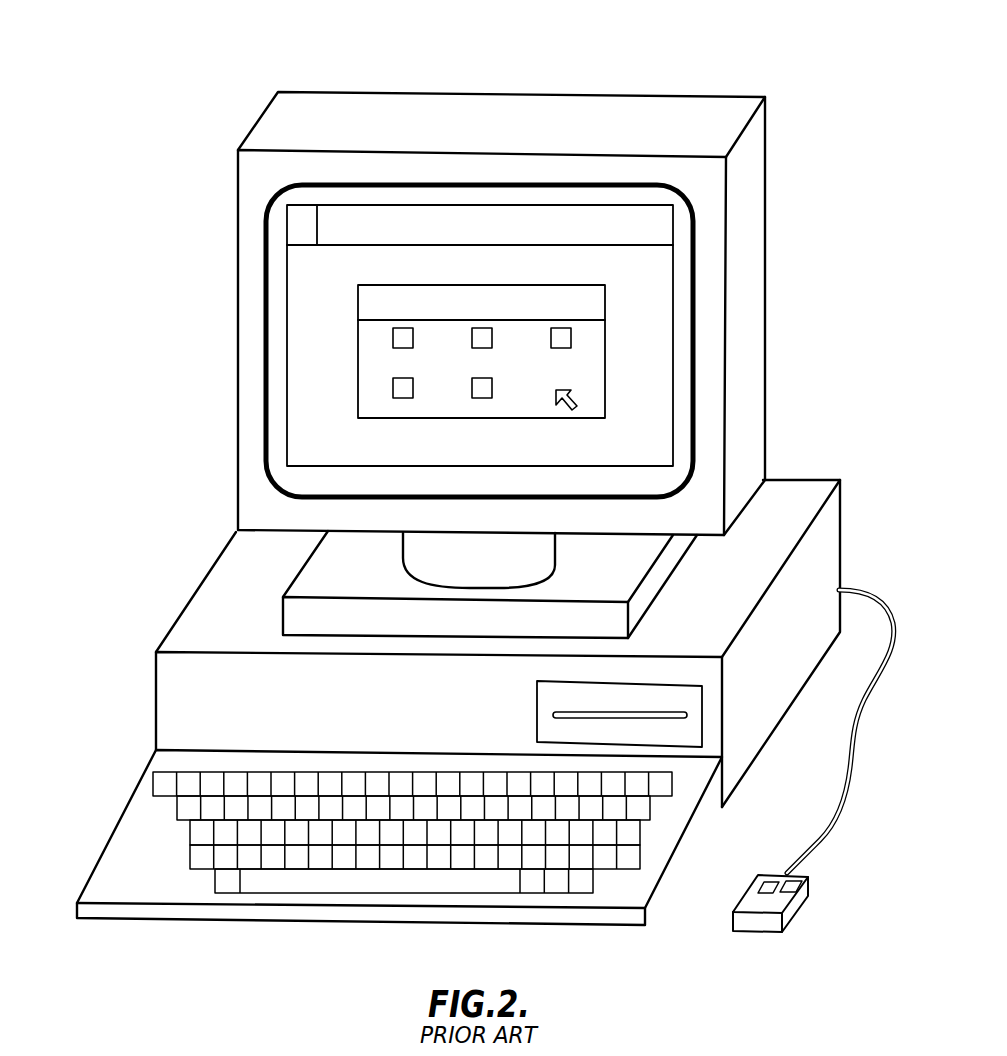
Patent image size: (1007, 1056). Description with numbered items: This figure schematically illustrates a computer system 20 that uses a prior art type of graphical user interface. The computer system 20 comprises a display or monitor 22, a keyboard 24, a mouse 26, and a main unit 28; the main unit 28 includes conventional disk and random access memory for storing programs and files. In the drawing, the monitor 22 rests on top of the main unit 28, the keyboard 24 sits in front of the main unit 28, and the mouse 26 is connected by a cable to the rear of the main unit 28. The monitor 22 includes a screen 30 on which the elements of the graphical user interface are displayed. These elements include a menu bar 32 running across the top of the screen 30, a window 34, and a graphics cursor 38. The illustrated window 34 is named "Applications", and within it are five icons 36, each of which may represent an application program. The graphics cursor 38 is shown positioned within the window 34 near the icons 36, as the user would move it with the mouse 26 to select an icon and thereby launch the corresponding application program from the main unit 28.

The computer system 20 is at (212, 73).
The monitor 22 is at (498, 133).
The keyboard 24 is at (120, 856).
The mouse 26 is at (780, 900).
The main unit 28 is at (198, 598).
The screen 30 is at (660, 295).
The menu bar 32 is at (660, 232).
The window 34 is at (605, 363).
The icons 36 is at (393, 332).
The graphics cursor 38 is at (576, 404).